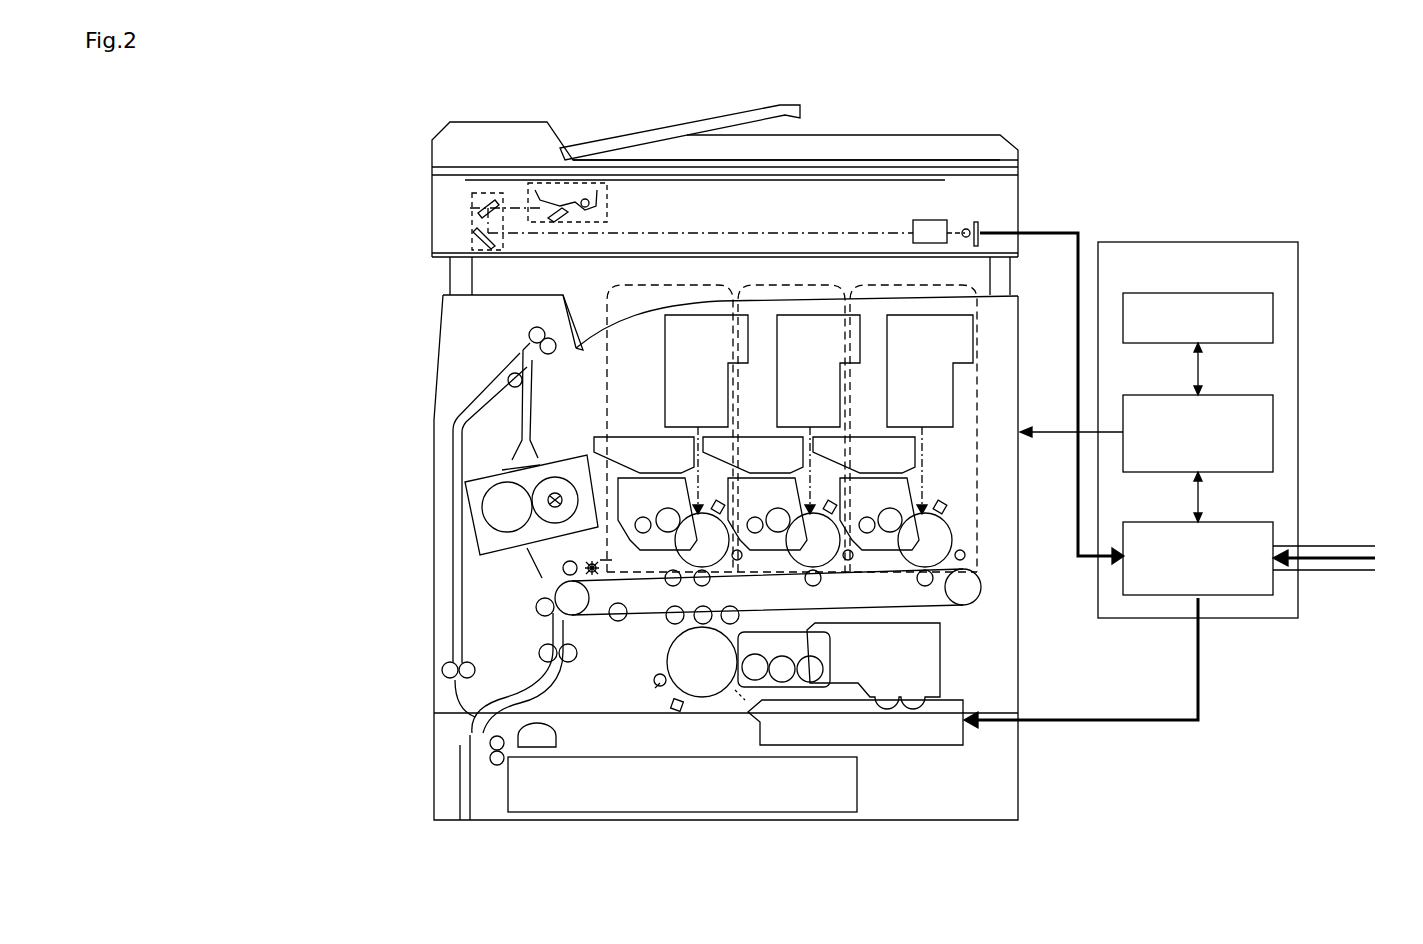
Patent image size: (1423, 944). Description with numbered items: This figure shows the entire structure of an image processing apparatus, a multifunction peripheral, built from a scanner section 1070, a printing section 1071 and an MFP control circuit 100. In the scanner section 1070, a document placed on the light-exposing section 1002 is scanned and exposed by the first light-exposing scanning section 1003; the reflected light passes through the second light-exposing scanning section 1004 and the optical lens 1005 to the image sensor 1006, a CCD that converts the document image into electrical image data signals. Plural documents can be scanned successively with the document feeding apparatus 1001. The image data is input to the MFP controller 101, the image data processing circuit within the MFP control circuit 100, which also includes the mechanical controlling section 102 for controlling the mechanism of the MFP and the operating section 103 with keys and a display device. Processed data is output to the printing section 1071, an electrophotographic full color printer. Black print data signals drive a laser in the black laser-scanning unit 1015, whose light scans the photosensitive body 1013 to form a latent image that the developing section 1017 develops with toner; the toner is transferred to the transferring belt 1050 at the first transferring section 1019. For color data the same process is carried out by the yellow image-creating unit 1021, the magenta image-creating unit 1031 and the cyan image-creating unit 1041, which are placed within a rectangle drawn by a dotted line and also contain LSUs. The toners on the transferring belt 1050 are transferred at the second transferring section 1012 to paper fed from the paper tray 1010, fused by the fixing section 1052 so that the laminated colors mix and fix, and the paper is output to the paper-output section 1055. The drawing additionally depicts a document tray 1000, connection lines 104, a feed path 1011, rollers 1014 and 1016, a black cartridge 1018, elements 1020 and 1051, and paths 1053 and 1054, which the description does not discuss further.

The MFP control circuit 100 is at (1273, 618).
The MFP controller 101 is at (1273, 523).
The mechanical controlling section 102 is at (1273, 395).
The operating section 103 is at (1273, 295).
The external connection lines 104 is at (1323, 545).
The document tray 1000 is at (690, 120).
The document feeding apparatus 1001 is at (437, 131).
The light-exposing section 1002 is at (748, 173).
The first light-exposing scanning section 1003 is at (548, 185).
The second light-exposing scanning section 1004 is at (480, 232).
The optical lens 1005 is at (978, 220).
The image sensor 1006 is at (1000, 237).
The paper tray 1010 is at (557, 790).
The paper feed path 1011 is at (548, 650).
The second transferring section 1012 is at (545, 605).
The photosensitive body 1013 is at (708, 700).
The pressure roller 1014 is at (680, 718).
The black laser-scanning unit 1015 is at (933, 718).
The transfer roller 1016 is at (745, 705).
The developing section 1017 is at (785, 650).
The black toner cartridge 1018 is at (930, 655).
The first transferring section 1019 is at (650, 690).
The secondary transfer section 1020 is at (690, 628).
The yellow image-creating unit 1021 is at (693, 283).
The magenta image-creating unit 1031 is at (806, 290).
The cyan image-creating unit 1041 is at (955, 300).
The transferring belt 1050 is at (950, 608).
The separation roller 1051 is at (563, 563).
The fixing section 1052 is at (530, 500).
The duplex path 1053 is at (455, 427).
The discharge path 1054 is at (520, 372).
The paper-output section 1055 is at (583, 352).
The scanner section 1070 is at (1020, 215).
The printing section 1071 is at (1022, 293).